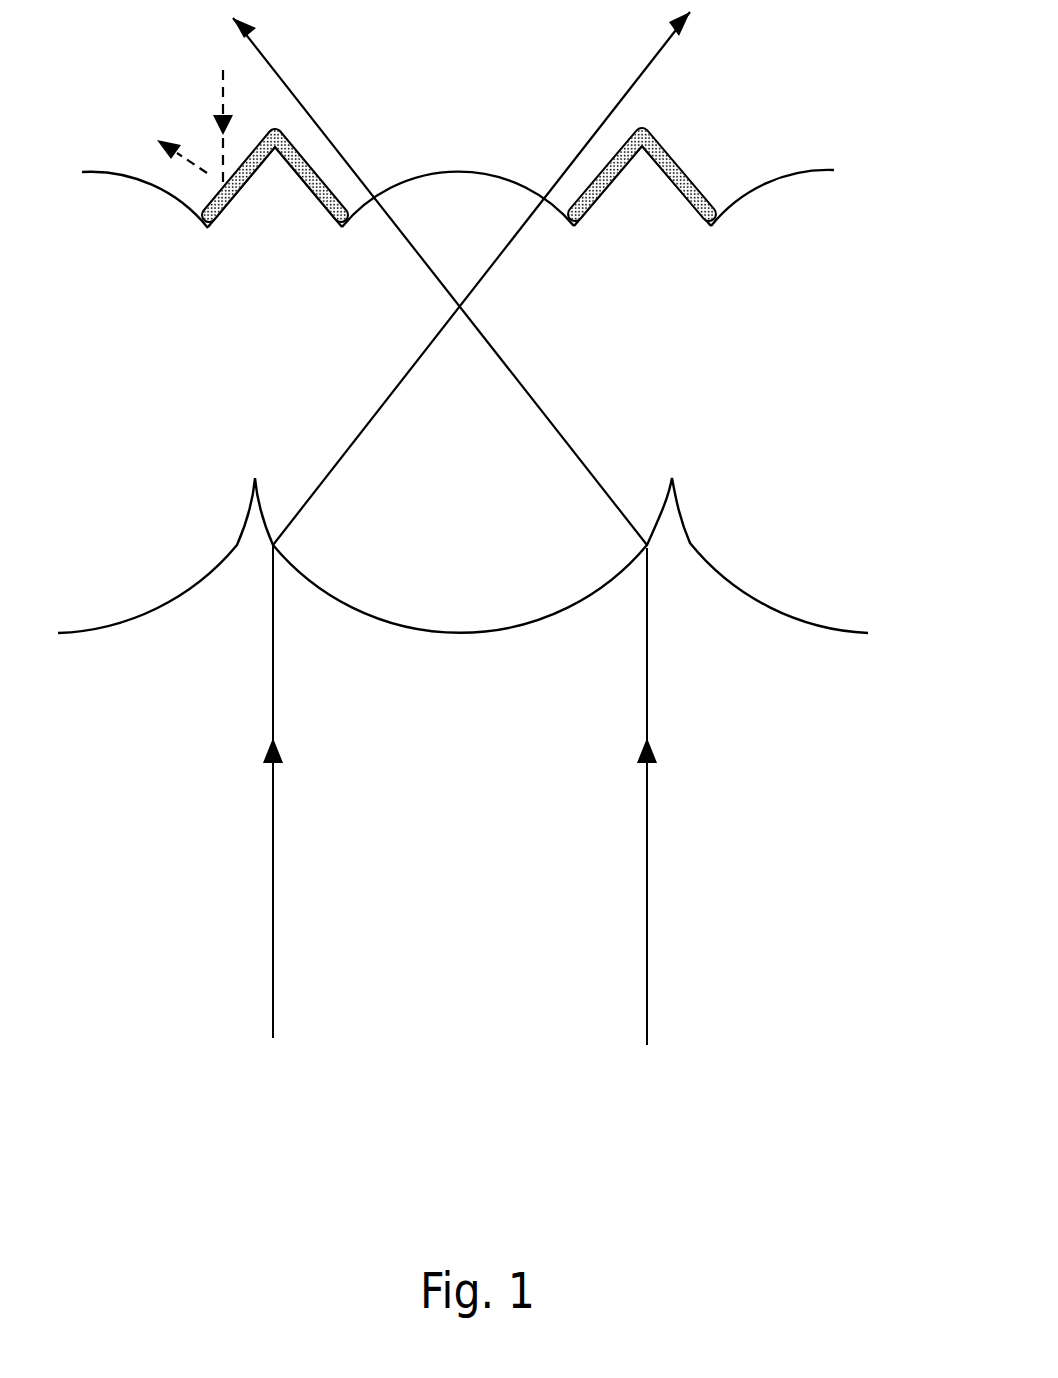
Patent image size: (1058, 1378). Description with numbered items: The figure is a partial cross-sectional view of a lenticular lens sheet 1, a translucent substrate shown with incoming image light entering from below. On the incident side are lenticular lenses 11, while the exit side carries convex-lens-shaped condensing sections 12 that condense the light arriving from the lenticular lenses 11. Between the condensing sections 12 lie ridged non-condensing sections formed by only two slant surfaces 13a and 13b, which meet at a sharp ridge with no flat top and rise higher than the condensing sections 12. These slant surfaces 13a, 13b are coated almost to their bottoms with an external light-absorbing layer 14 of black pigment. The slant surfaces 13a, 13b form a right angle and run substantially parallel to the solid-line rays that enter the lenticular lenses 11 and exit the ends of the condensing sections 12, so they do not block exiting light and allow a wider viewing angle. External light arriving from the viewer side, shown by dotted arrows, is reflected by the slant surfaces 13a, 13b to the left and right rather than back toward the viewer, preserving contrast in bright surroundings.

The lenticular lens sheet 1 is at (858, 240).
The lenticular lenses 11 is at (470, 633).
The condensing sections 12 is at (462, 177).
The slant surface 13a is at (587, 212).
The slant surface 13b is at (685, 200).
The external light-absorbing layer 14 is at (670, 145).